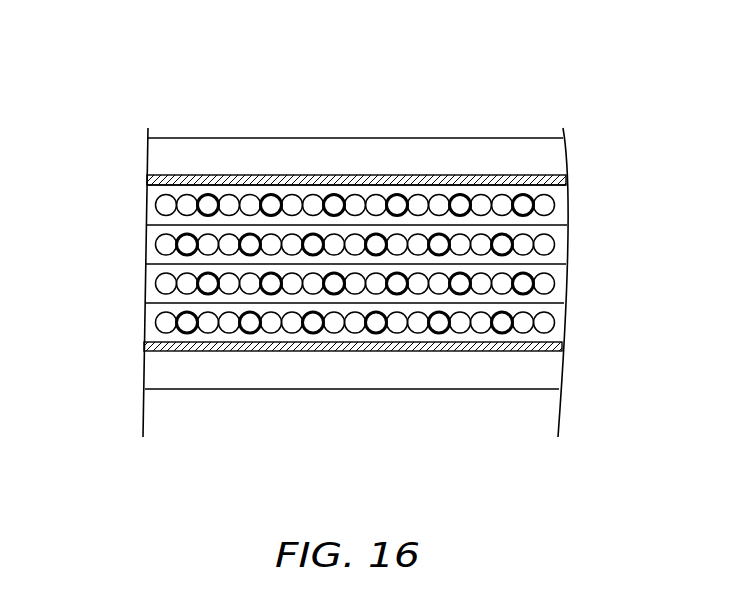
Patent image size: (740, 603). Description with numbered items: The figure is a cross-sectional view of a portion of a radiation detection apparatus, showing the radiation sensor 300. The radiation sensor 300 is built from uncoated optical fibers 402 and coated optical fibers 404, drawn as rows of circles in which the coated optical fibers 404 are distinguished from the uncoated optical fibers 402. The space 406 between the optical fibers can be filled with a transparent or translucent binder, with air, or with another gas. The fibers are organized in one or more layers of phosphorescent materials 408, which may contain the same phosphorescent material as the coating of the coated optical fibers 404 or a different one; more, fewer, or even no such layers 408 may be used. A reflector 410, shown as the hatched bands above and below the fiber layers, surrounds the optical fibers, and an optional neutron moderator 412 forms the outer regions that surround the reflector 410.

The radiation sensor 300 is at (553, 80).
The uncoated optical fibers 402 is at (544, 207).
The coated optical fibers 404 is at (372, 323).
The space between optical fibers 406 is at (362, 192).
The layers of phosphorescent materials 408 is at (138, 263).
The reflector 410 is at (211, 175).
The neutron moderator 412 is at (551, 165).